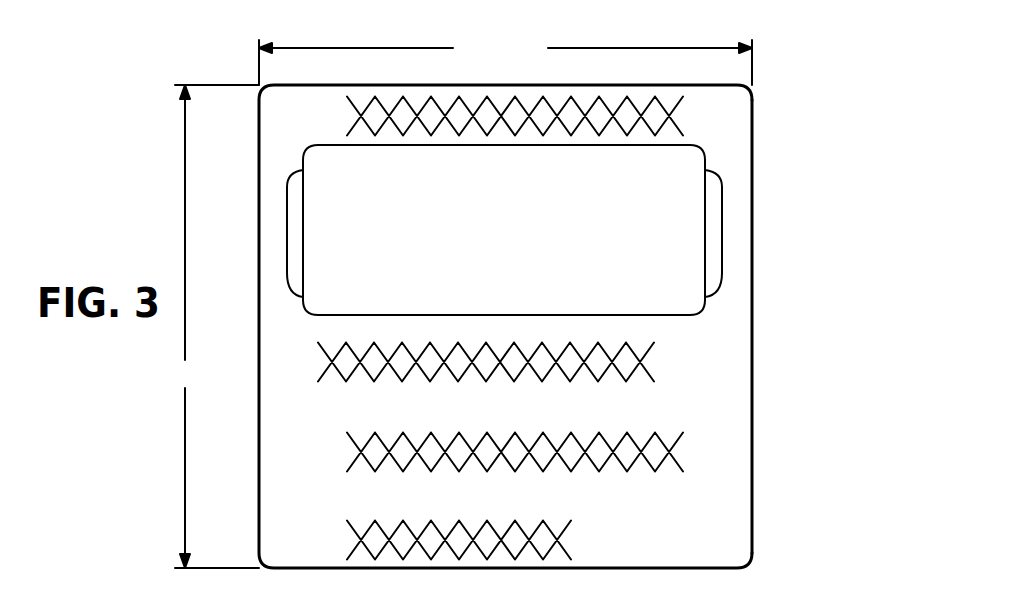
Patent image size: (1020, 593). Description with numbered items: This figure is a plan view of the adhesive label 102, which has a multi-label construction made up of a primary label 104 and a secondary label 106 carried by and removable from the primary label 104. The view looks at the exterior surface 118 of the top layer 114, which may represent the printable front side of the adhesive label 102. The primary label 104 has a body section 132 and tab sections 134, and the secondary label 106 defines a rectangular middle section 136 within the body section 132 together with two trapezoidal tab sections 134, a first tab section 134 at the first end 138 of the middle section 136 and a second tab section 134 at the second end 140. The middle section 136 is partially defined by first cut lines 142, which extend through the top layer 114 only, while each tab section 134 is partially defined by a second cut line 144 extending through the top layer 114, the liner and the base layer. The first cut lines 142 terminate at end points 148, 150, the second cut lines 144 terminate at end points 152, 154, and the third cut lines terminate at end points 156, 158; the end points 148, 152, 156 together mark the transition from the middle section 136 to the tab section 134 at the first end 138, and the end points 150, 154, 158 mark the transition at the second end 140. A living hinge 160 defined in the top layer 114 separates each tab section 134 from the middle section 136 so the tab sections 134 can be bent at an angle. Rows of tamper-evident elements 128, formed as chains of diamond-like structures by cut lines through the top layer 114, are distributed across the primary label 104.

The adhesive label 102 is at (754, 90).
The primary label 104 is at (723, 510).
The secondary label 106 is at (633, 179).
The top layer 114 is at (796, 326).
The exterior surface 118 is at (722, 407).
The tamper-evident elements 128 is at (367, 460).
The body section 132 is at (680, 355).
The tab section 134 is at (294, 197).
The middle section 136 is at (678, 167).
The first end 138 is at (300, 262).
The second end 140 is at (707, 234).
The first cut line 142 is at (492, 145).
The second cut line 144 is at (288, 226).
The end point 148 is at (293, 174).
The end point 152 is at (293, 174).
The end point 156 is at (302, 167).
The end point 150 is at (787, 247).
The end point 154 is at (787, 247).
The end point 158 is at (708, 160).
The living hinge 160 is at (305, 232).